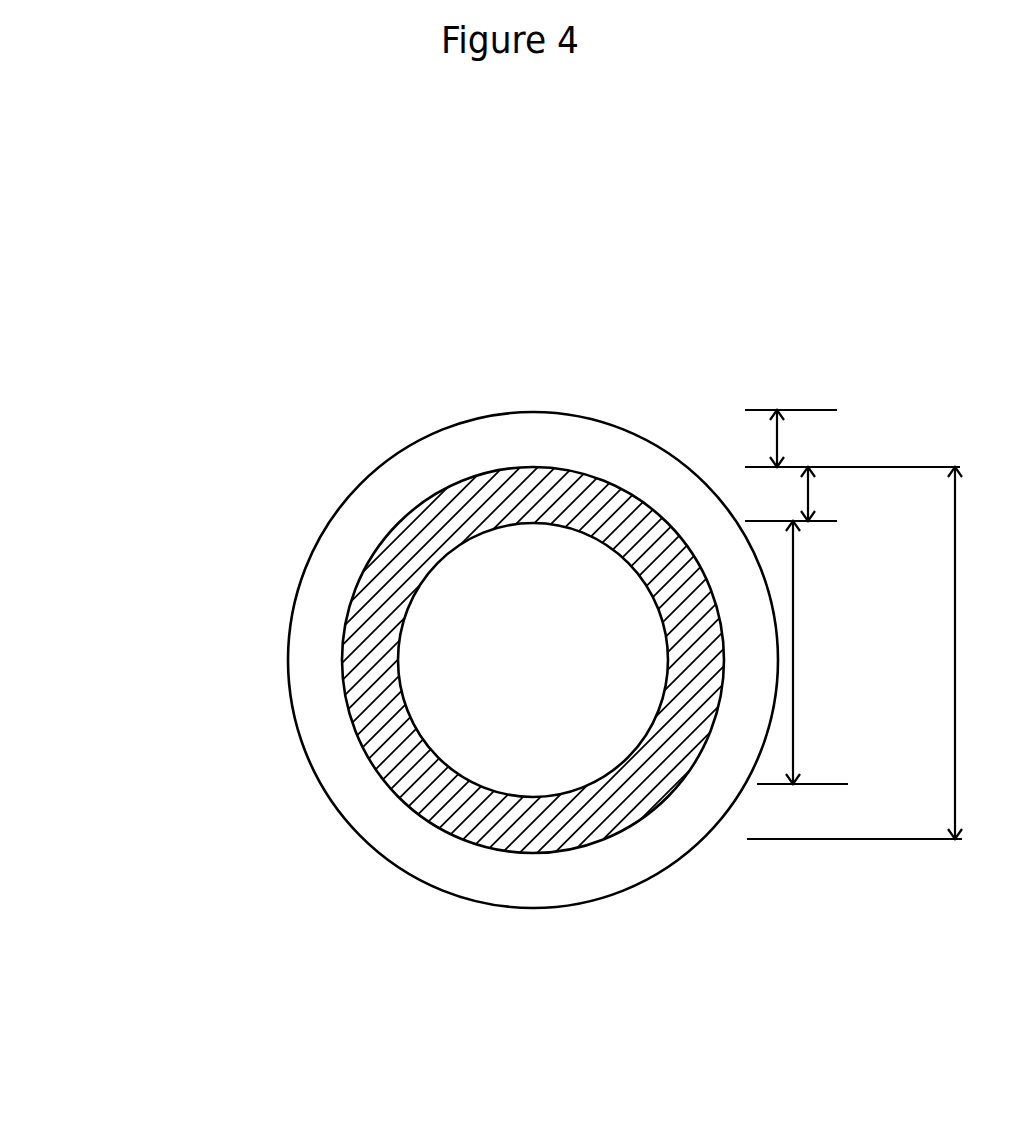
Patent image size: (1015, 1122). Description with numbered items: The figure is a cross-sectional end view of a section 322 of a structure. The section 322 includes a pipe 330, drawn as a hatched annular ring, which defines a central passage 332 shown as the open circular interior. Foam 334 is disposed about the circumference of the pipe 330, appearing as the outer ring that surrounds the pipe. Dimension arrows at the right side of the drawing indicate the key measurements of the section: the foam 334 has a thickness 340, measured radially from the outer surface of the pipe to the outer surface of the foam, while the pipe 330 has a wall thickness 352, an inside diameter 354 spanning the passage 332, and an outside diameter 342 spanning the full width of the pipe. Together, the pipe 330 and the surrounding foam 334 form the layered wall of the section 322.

The section 322 is at (250, 490).
The pipe 330 is at (433, 537).
The passage 332 is at (554, 672).
The foam 334 is at (508, 443).
The thickness 340 is at (821, 438).
The outside diameter 342 is at (879, 653).
The wall thickness 352 is at (852, 494).
The inside diameter 354 is at (796, 652).